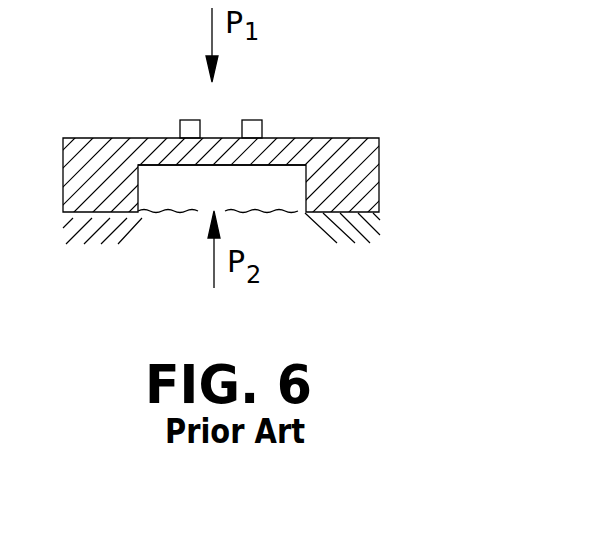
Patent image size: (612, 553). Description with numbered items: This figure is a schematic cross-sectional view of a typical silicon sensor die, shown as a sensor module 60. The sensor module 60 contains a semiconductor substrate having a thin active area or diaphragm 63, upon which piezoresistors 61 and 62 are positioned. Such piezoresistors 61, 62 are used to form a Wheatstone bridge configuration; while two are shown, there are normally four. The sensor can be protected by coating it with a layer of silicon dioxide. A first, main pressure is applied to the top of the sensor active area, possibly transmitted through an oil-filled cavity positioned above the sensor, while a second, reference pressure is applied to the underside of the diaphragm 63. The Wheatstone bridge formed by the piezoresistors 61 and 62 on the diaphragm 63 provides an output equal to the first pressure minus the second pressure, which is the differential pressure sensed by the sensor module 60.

The sensor module 60 is at (380, 155).
The piezoresistor 61 is at (252, 118).
The piezoresistor 62 is at (188, 118).
The diaphragm 63 is at (335, 145).